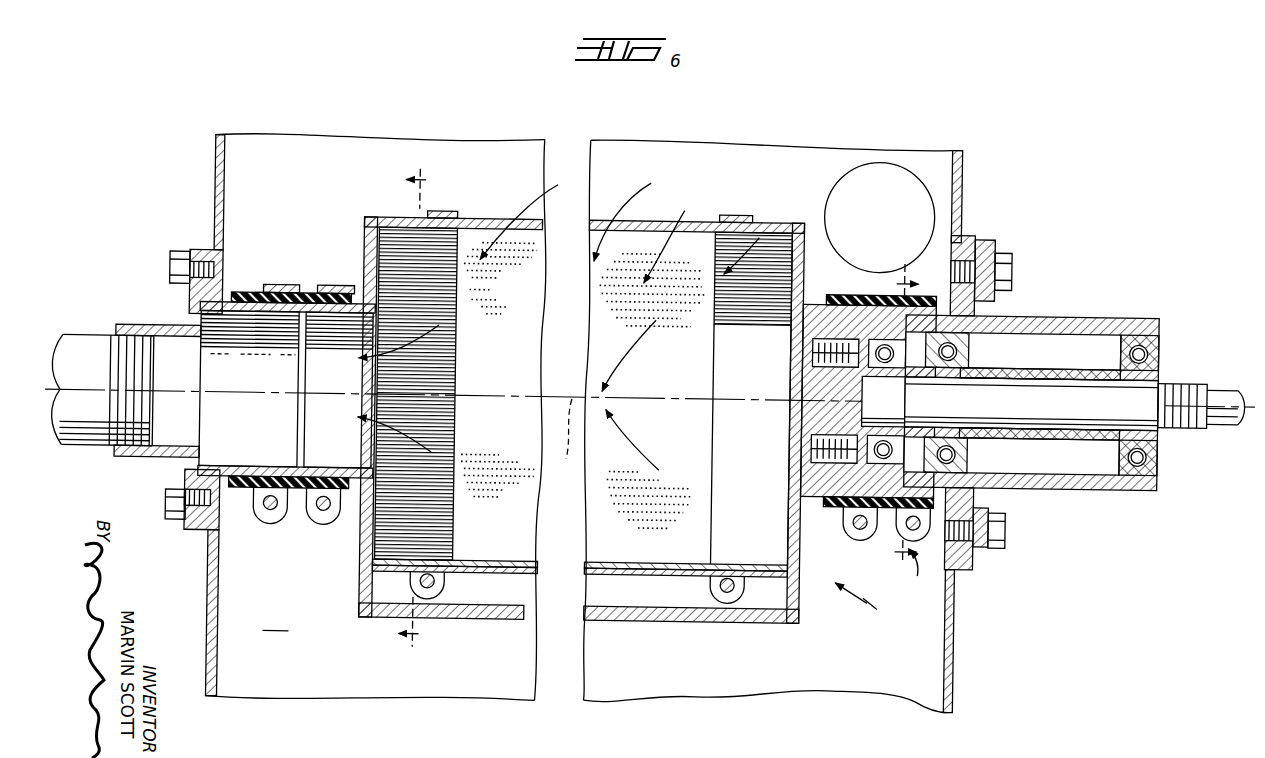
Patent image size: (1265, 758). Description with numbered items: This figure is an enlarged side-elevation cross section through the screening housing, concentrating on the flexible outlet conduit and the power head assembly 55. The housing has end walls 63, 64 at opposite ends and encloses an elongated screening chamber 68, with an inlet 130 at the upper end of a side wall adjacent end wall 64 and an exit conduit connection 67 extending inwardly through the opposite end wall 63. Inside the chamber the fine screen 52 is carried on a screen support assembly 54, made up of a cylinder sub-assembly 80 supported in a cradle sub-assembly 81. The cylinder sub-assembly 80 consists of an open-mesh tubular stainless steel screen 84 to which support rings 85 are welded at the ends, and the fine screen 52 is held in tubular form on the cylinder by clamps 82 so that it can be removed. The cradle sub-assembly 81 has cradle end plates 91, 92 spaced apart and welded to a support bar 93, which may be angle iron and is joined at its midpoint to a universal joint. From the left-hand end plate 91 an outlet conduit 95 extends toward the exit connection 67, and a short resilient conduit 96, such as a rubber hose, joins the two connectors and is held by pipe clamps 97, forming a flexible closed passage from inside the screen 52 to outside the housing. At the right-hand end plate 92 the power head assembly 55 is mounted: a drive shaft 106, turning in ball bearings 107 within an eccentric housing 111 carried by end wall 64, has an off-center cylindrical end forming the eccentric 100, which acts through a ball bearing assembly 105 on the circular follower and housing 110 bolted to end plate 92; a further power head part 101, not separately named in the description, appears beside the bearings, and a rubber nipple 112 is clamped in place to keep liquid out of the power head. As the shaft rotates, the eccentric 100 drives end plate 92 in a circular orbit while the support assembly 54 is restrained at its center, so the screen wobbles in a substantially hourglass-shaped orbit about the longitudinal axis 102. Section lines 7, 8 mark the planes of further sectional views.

The end wall 63 is at (216, 153).
The end wall 64 is at (960, 192).
The screening chamber 68 is at (275, 620).
The exit conduit connection 67 is at (233, 472).
The outlet conduit 95 is at (320, 472).
The flexible conduit 96 is at (305, 298).
The pipe clamps 97 is at (275, 290).
The clamps 82 is at (444, 221).
The cylinder sub-assembly 80 is at (668, 228).
The fine screen 52 is at (596, 225).
The tubular stainless steel screen 84 is at (488, 569).
The support rings 85 is at (406, 563).
The cradle end plate 91 is at (362, 590).
The cradle end plate 92 is at (803, 553).
The support bar 93 is at (470, 621).
The eccentric element 100 is at (900, 398).
The hub 101 is at (840, 462).
The ball bearing assembly 105 is at (840, 292).
The follower and housing 110 is at (840, 504).
The drive shaft 106 is at (1032, 401).
The ball bearings 107 is at (970, 347).
The eccentric housing 111 is at (1070, 314).
The inlet 130 is at (897, 217).
The longitudinal axis 102 is at (572, 437).
The rubber nipple 112 is at (854, 588).
The screen support assembly 54 is at (878, 607).
The power head assembly 55 is at (908, 569).
The cradle sub-assembly 81 is at (806, 598).
The section line 7- 7 is at (901, 410).
The section line 8- 8 is at (418, 412).